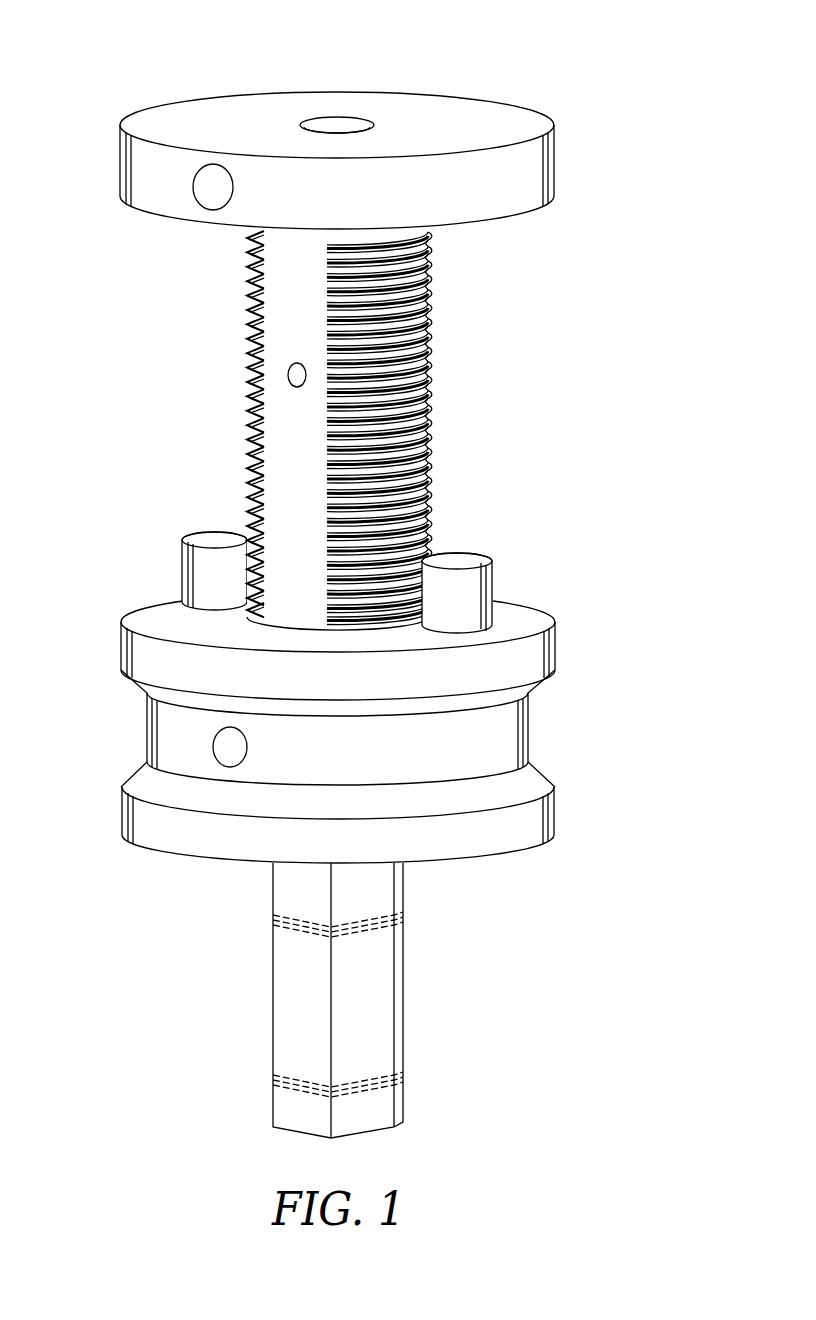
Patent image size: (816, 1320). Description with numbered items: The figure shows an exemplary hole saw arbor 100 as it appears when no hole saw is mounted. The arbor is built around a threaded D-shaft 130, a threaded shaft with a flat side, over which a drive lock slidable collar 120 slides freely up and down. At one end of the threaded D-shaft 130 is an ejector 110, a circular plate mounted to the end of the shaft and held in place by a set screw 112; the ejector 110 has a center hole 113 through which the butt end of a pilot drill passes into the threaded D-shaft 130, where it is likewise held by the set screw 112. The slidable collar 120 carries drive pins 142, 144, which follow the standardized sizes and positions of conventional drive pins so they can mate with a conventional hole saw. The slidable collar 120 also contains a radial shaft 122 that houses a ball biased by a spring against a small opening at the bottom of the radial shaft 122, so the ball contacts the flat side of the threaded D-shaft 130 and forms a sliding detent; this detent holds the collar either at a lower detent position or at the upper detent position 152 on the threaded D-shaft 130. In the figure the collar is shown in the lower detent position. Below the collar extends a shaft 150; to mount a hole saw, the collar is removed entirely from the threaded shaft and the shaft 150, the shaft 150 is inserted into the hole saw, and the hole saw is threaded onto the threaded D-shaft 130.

The hole saw arbor 100 is at (646, 101).
The ejector 110 is at (556, 164).
The set screw 112 is at (217, 192).
The hole 113 is at (337, 121).
The drive lock slidable collar 120 is at (557, 646).
The radial shaft 122 is at (226, 743).
The threaded D-shaft 130 is at (428, 454).
The drive pin 142 is at (485, 563).
The drive pin 144 is at (192, 537).
The shaft 150 is at (405, 1008).
The upper detent position 152 is at (288, 375).